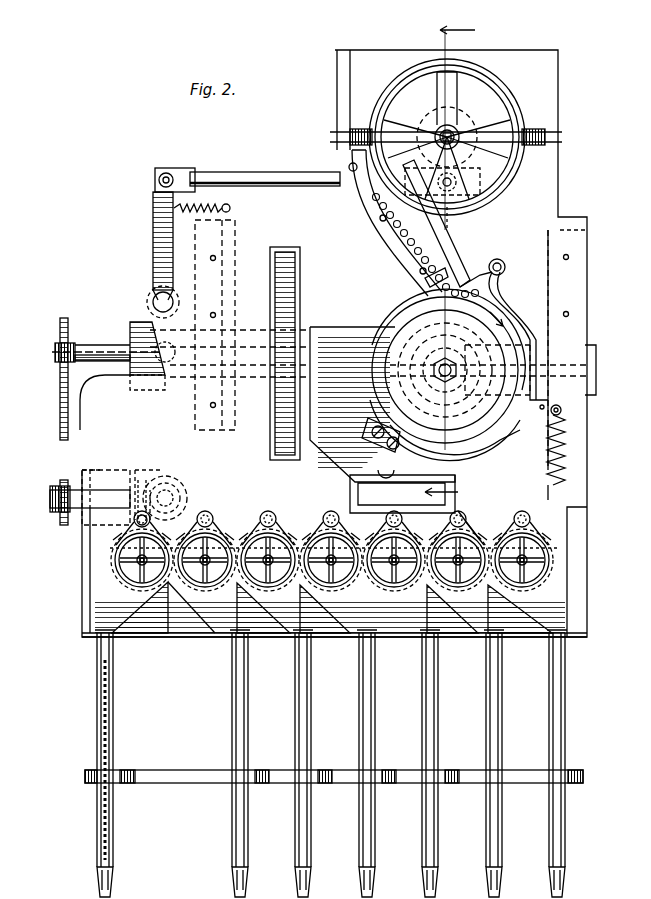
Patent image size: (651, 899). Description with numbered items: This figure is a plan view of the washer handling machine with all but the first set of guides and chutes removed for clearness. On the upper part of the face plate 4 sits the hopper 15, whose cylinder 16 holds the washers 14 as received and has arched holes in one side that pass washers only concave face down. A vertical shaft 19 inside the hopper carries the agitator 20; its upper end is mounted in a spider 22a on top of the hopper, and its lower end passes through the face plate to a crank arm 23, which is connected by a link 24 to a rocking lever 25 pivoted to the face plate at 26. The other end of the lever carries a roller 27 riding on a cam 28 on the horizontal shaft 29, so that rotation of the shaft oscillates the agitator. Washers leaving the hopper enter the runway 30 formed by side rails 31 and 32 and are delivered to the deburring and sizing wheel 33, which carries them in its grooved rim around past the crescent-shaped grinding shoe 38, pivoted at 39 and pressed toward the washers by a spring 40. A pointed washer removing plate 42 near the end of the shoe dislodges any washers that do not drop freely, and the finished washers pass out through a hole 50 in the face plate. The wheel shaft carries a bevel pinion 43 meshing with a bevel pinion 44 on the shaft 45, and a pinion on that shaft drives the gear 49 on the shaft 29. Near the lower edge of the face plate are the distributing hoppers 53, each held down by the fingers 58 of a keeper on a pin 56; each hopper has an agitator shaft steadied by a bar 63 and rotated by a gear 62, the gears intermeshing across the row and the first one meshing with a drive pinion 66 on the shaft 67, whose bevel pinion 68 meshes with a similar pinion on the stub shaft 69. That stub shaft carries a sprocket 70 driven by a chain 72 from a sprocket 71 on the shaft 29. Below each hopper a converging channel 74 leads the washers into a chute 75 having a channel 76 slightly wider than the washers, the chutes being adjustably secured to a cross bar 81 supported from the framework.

The face plate 4 is at (556, 190).
The washers 14 is at (424, 274).
The hopper or bin 15 is at (487, 70).
The cylinder 16 is at (492, 100).
The vertical shaft 19 is at (452, 128).
The agitator or stirrer 20 is at (495, 118).
The spider 22a is at (483, 190).
The crank arm 23 is at (455, 214).
The link 24 is at (276, 180).
The rocking lever 25 is at (152, 236).
The pivot 26 is at (157, 298).
The roller 27 is at (172, 393).
The cam 28 is at (128, 385).
The horizontal shaft 29 is at (104, 340).
The runway 30 is at (348, 160).
The side rail 31 is at (398, 254).
The side rail 32 is at (468, 275).
The deburring and sizing wheel 33 is at (460, 424).
The stationary grinding member or shoe 38 is at (504, 290).
The pivot 39 is at (502, 262).
The spring 40 is at (548, 466).
The washer removing plate 42 is at (370, 446).
The bevel pinion 43 is at (428, 340).
The bevel pinion 44 is at (524, 325).
The shaft 45 is at (302, 404).
The gear 49 is at (296, 272).
The hole 50 is at (384, 469).
The distributing hoppers 53 is at (230, 528).
The pin 56 is at (326, 512).
The fingers 58 is at (466, 522).
The gear 62 is at (330, 607).
The bar 63 is at (208, 585).
The drive pinion 66 is at (190, 483).
The shaft 67 is at (170, 478).
The bevel pinion 68 is at (142, 462).
The stub shaft 69 is at (100, 478).
The sprocket 70 is at (50, 498).
The sprocket 71 is at (53, 360).
The chain 72 is at (58, 420).
The converging channel 74 is at (300, 620).
The chute or washer holder 75 is at (293, 842).
The channel 76 is at (244, 725).
The cross bar 81 is at (404, 768).